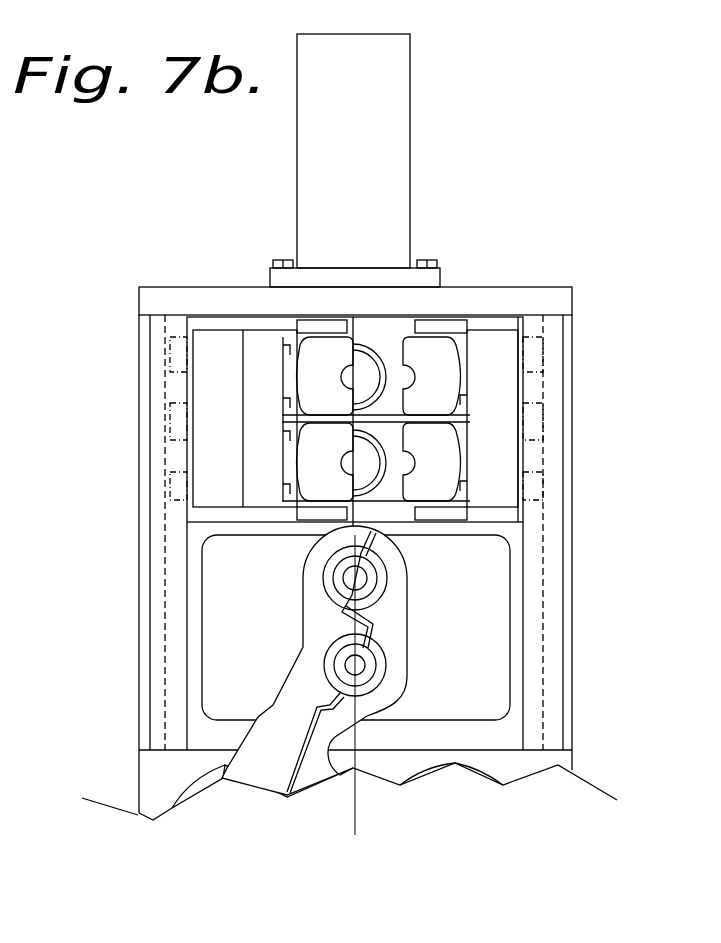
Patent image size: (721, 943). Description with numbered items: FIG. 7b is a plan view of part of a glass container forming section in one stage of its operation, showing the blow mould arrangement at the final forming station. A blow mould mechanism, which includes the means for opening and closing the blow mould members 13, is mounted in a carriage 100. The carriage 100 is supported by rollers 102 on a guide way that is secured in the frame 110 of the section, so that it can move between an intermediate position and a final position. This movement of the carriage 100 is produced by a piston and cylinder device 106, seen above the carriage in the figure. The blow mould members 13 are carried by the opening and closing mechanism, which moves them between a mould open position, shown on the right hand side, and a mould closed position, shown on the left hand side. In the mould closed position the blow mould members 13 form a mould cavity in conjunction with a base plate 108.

The piston and cylinder device 106 is at (380, 147).
The base plate 108 is at (392, 345).
The carriage 100 is at (493, 353).
The frame 110 is at (138, 448).
The rollers 102 is at (177, 483).
The blow mould members 13 is at (328, 472).